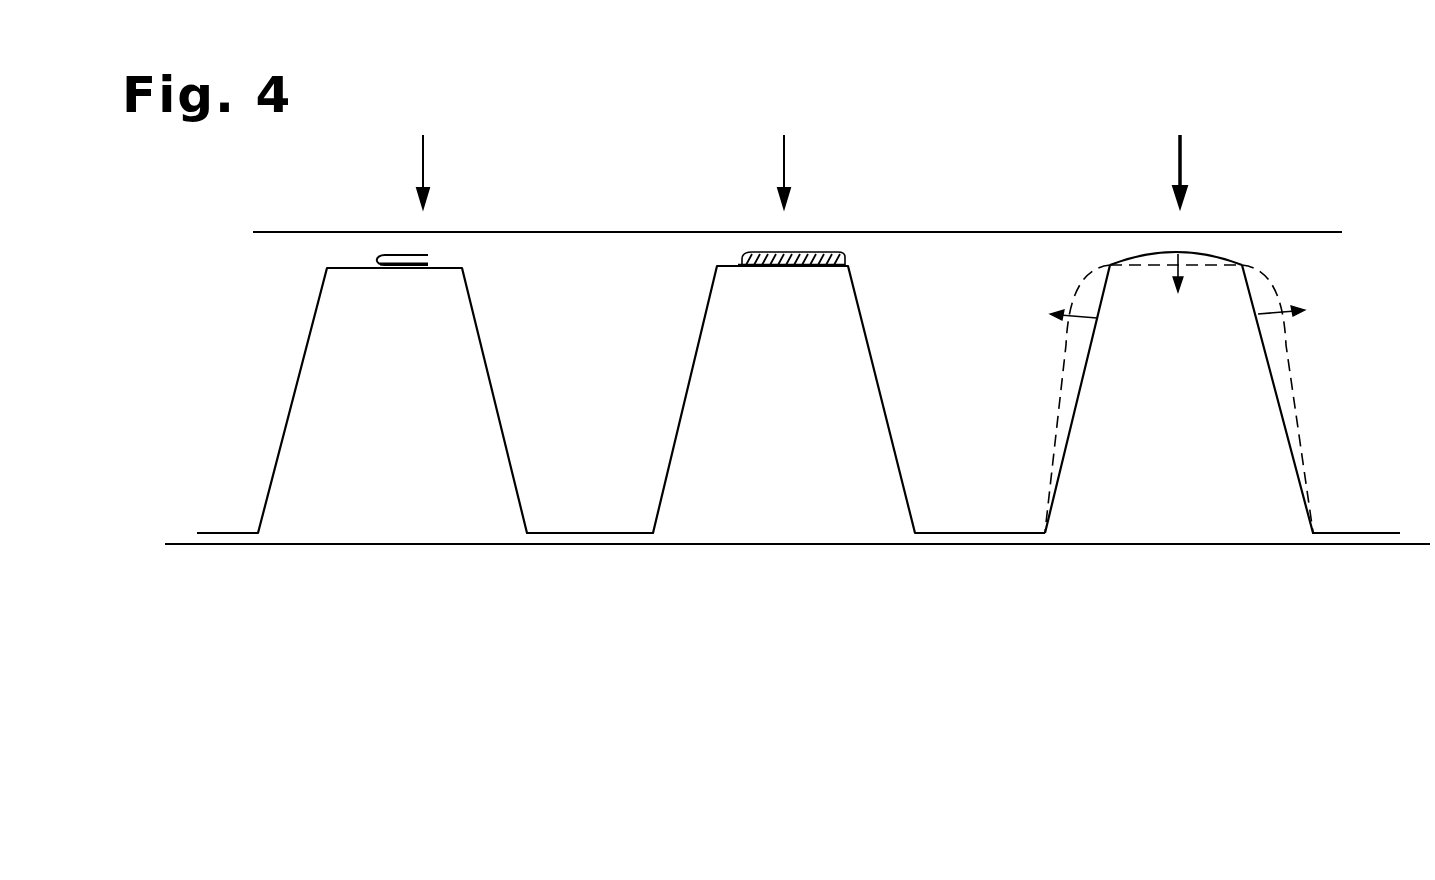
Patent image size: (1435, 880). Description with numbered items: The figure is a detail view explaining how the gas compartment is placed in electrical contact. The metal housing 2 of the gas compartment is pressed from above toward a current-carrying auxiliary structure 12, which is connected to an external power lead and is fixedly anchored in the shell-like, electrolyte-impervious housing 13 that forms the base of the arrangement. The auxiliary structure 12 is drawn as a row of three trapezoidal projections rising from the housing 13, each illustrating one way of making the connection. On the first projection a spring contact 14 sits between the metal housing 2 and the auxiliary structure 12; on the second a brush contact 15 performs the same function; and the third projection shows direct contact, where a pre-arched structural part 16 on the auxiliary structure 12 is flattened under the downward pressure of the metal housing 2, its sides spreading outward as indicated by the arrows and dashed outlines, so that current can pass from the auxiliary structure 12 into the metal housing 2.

The metal housing 2 is at (1240, 231).
The auxiliary structure 12 is at (293, 397).
The housing 13 is at (830, 546).
The spring contacts 14 is at (400, 253).
The brush contacts 15 is at (768, 252).
The pre-arched structural parts 16 is at (1160, 252).